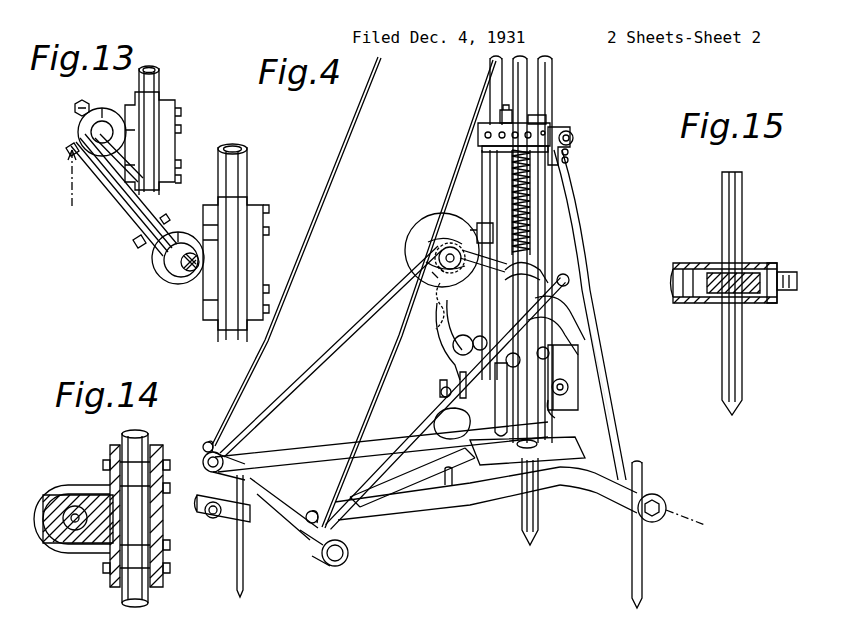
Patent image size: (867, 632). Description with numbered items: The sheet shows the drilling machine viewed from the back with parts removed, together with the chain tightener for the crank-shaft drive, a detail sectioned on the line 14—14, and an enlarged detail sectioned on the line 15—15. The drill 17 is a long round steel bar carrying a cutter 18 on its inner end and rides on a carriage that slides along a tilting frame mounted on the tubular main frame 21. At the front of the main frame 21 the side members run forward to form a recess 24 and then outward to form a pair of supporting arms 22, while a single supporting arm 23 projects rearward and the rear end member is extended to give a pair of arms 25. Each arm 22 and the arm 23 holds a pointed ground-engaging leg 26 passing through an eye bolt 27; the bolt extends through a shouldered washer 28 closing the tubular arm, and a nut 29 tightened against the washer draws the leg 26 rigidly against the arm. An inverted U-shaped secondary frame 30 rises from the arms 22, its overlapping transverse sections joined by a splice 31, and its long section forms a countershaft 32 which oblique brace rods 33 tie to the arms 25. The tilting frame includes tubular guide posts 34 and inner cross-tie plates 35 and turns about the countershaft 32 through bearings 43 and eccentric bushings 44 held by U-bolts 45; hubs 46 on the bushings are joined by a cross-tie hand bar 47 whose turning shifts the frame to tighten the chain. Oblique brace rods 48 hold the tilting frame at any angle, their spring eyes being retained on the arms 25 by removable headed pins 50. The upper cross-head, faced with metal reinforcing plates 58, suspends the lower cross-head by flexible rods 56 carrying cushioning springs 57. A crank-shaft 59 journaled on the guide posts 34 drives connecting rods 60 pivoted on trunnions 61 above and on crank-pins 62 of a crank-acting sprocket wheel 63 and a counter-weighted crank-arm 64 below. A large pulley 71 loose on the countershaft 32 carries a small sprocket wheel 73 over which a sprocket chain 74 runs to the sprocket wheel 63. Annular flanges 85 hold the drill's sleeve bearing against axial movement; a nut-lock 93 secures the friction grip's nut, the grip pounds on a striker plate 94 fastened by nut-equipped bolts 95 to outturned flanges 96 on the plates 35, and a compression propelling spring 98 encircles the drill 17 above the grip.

In FIG. 13, the section line 14 is at (170, 60).
In FIG. 4, the section line 15 is at (652, 508).
In FIG. 4, the drill 17 is at (520, 90).
In FIG. 4, the cutter 18 is at (520, 535).
In FIG. 4, the main frame 21 is at (318, 455).
In FIG. 15, the supporting arms 22 is at (716, 262).
In FIG. 4, the supporting arms 22 is at (441, 384).
In FIG. 4, the supporting arm 23 is at (233, 512).
In FIG. 4, the recess 24 is at (446, 462).
In FIG. 4, the arms 25 is at (340, 566).
In FIG. 15, the ground-engaging leg 26 is at (730, 343).
In FIG. 4, the ground-engaging leg 26 is at (447, 486).
In FIG. 15, the eye bolts 27 is at (715, 301).
In FIG. 15, the shouldered washers 28 is at (772, 304).
In FIG. 15, the nuts 29 is at (785, 268).
In FIG. 4, the nuts 29 is at (440, 392).
In FIG. 4, the secondary frame 30 is at (590, 360).
In FIG. 4, the splice 31 is at (545, 276).
In FIG. 13, the countershaft 32 is at (75, 104).
In FIG. 14, the countershaft 32 is at (72, 492).
In FIG. 4, the countershaft 32 is at (570, 285).
In FIG. 4, the oblique brace rods 33 is at (332, 362).
In FIG. 13, the tubular guide posts 34 is at (161, 87).
In FIG. 14, the tubular guide posts 34 is at (135, 456).
In FIG. 4, the tubular guide posts 34 is at (490, 72).
In FIG. 4, the inner cross-tie plates 35 is at (564, 405).
In FIG. 13, the bearings 43 is at (135, 127).
In FIG. 14, the bearings 43 is at (100, 541).
In FIG. 4, the bearings 43 is at (483, 225).
In FIG. 13, the eccentric bushings 44 is at (178, 276).
In FIG. 14, the eccentric bushings 44 is at (67, 540).
In FIG. 13, the U-bolts 45 is at (96, 110).
In FIG. 14, the U-bolts 45 is at (53, 496).
In FIG. 4, the U-bolts 45 is at (450, 264).
In FIG. 13, the hubs 46 is at (79, 137).
In FIG. 4, the hubs 46 is at (425, 282).
In FIG. 13, the cross-tie hand bar 47 is at (125, 218).
In FIG. 4, the cross-tie hand bar 47 is at (456, 340).
In FIG. 4, the oblique brace rods 48 is at (345, 157).
In FIG. 4, the removable headed pins 50 is at (316, 511).
In FIG. 4, the flexible rods 56 is at (480, 150).
In FIG. 4, the cushioning springs 57 is at (492, 138).
In FIG. 4, the metal reinforcing plates 58 is at (505, 116).
In FIG. 4, the crank-shaft 59 is at (458, 356).
In FIG. 4, the connecting rods 60 is at (480, 185).
In FIG. 4, the trunnions 61 is at (575, 140).
In FIG. 4, the crank-pins 62 is at (568, 390).
In FIG. 4, the crank-acting sprocket wheel 63 is at (472, 347).
In FIG. 4, the counter-weighted crank-arm 64 is at (545, 378).
In FIG. 4, the pulley 71 is at (415, 238).
In FIG. 4, the sprocket wheel 73 is at (440, 256).
In FIG. 4, the sprocket chain 74 is at (432, 305).
In FIG. 4, the annular external flanges 85 is at (540, 119).
In FIG. 4, the nut-lock 93 is at (572, 313).
In FIG. 4, the striker plate 94 is at (494, 397).
In FIG. 4, the nut-equipped bolts 95 is at (562, 330).
In FIG. 4, the outturned flanges 96 is at (527, 467).
In FIG. 4, the compression propelling spring 98 is at (535, 172).